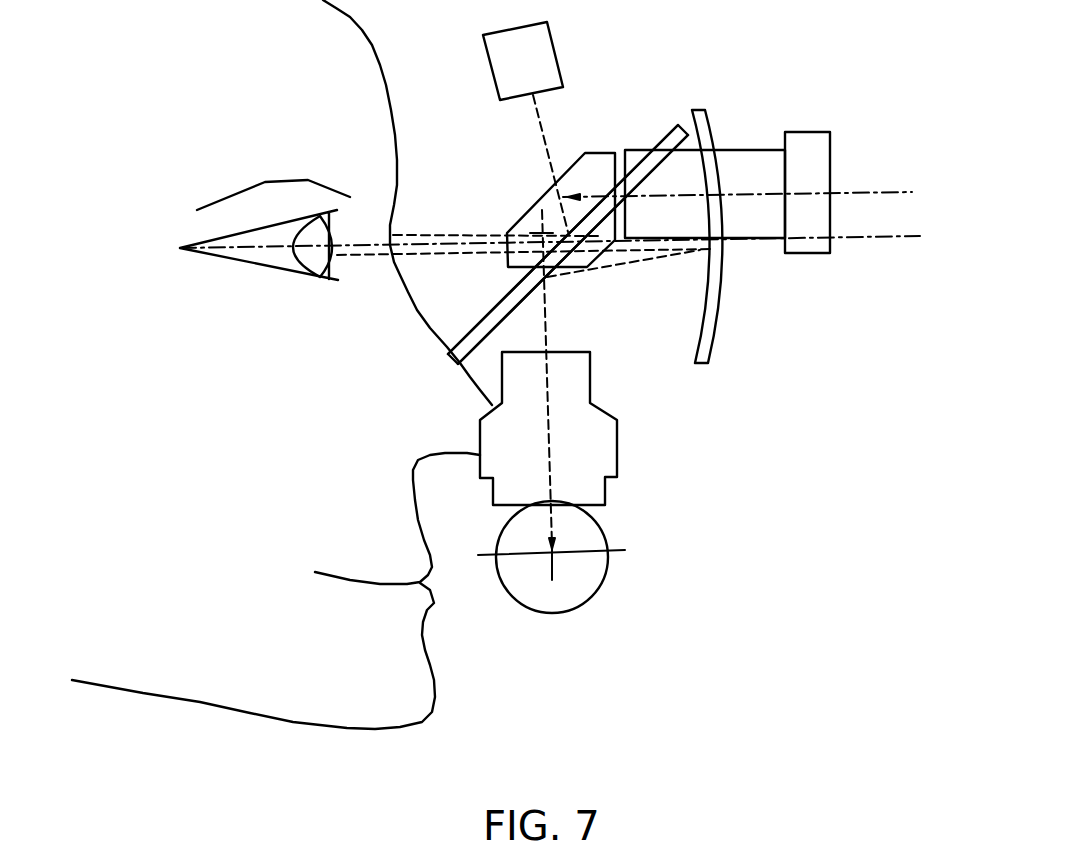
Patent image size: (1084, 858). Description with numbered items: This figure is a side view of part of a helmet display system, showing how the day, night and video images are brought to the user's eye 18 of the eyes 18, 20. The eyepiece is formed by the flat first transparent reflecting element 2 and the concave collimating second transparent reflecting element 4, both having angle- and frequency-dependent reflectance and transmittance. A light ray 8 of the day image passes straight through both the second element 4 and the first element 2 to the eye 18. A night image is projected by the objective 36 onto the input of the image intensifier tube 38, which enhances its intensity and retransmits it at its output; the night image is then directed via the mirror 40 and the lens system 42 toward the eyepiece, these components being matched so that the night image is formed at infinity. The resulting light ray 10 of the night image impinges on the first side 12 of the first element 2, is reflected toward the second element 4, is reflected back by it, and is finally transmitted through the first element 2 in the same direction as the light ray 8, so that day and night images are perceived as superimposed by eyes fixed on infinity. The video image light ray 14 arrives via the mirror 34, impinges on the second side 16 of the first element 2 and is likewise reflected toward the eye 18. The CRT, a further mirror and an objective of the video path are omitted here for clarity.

The first transparent reflecting element 2 is at (523, 296).
The second transparent reflecting element 4 is at (713, 284).
The light ray of day image 8 is at (905, 278).
The light ray of night image 10 is at (627, 283).
The first side of the first element 12 is at (504, 323).
The light ray of video image 14 is at (460, 235).
The second side of the first element 16 is at (504, 299).
The eye 18 is at (285, 281).
The eye 20 is at (311, 259).
The mirror 34 is at (530, 63).
The objective 36 is at (800, 152).
The image intensifier tube 38 is at (740, 160).
The mirror 40 is at (536, 203).
The lens system 42 is at (597, 448).